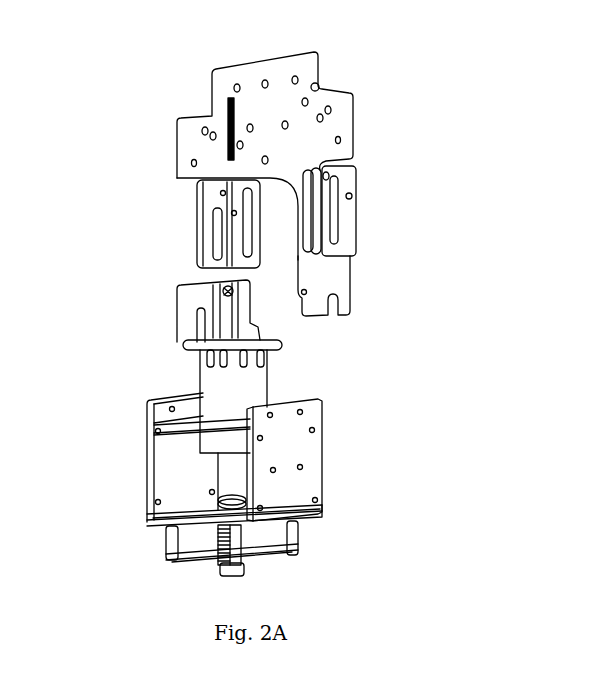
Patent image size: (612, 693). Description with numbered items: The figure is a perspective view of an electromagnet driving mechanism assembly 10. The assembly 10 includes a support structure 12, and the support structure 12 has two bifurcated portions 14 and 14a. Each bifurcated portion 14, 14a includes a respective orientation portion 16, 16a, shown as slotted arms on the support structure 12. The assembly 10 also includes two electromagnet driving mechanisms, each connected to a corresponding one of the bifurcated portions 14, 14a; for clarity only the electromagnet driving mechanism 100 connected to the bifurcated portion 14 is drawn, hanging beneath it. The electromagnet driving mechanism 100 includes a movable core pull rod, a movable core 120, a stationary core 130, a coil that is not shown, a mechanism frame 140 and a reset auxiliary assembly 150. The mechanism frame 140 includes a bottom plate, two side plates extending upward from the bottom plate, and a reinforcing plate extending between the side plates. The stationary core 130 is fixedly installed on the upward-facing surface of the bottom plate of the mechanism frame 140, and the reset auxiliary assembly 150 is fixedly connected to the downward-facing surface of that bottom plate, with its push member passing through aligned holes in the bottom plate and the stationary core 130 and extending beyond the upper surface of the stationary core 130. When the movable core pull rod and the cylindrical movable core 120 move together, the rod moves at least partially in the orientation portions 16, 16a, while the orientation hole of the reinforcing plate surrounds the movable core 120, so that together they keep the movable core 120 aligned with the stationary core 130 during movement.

The electromagnet driving mechanism assembly 10 is at (358, 64).
The support structure 12 is at (228, 83).
The bifurcated portion 14 is at (202, 293).
The bifurcated portion 14a is at (340, 284).
The orientation portion 16 is at (238, 241).
The orientation portion 16a is at (342, 222).
The electromagnet driving mechanism 100 is at (148, 361).
The movable core 120 is at (255, 381).
The stationary core 130 is at (215, 507).
The mechanism frame 140 is at (307, 453).
The reset auxiliary assembly 150 is at (292, 562).